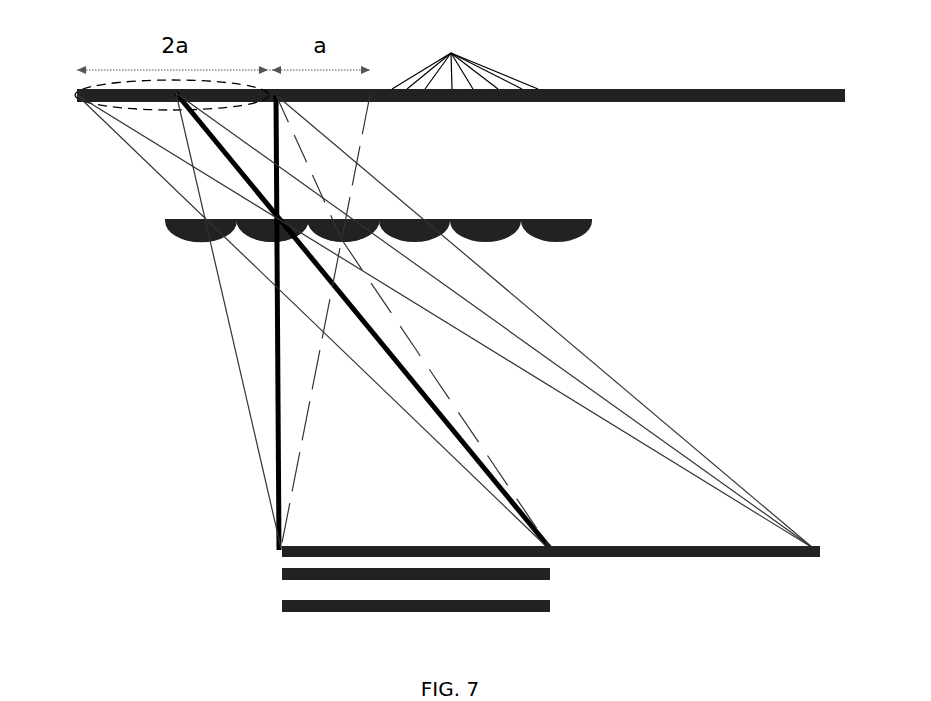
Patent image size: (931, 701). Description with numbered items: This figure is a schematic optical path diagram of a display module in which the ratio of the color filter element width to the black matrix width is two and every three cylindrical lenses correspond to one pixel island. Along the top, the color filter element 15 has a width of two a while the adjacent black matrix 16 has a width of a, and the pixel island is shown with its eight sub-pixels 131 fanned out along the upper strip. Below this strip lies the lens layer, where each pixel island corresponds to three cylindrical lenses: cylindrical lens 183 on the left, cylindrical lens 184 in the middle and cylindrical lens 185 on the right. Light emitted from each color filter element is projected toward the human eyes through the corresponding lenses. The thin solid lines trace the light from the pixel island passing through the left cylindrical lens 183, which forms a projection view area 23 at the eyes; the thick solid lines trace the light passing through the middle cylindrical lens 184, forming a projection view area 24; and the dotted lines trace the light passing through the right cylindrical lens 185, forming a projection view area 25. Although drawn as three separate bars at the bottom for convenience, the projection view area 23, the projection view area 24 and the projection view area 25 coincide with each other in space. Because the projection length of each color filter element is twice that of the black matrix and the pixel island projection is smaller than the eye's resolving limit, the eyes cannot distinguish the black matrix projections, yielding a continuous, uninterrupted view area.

The color filter element 15 is at (100, 92).
The black matrix 16 is at (632, 88).
The sub-pixels 131 is at (465, 55).
The cylindrical lens 183 is at (192, 221).
The cylindrical lens 184 is at (272, 220).
The cylindrical lens 185 is at (340, 219).
The projection view area 23 is at (703, 550).
The projection view area 24 is at (555, 580).
The projection view area 25 is at (520, 610).